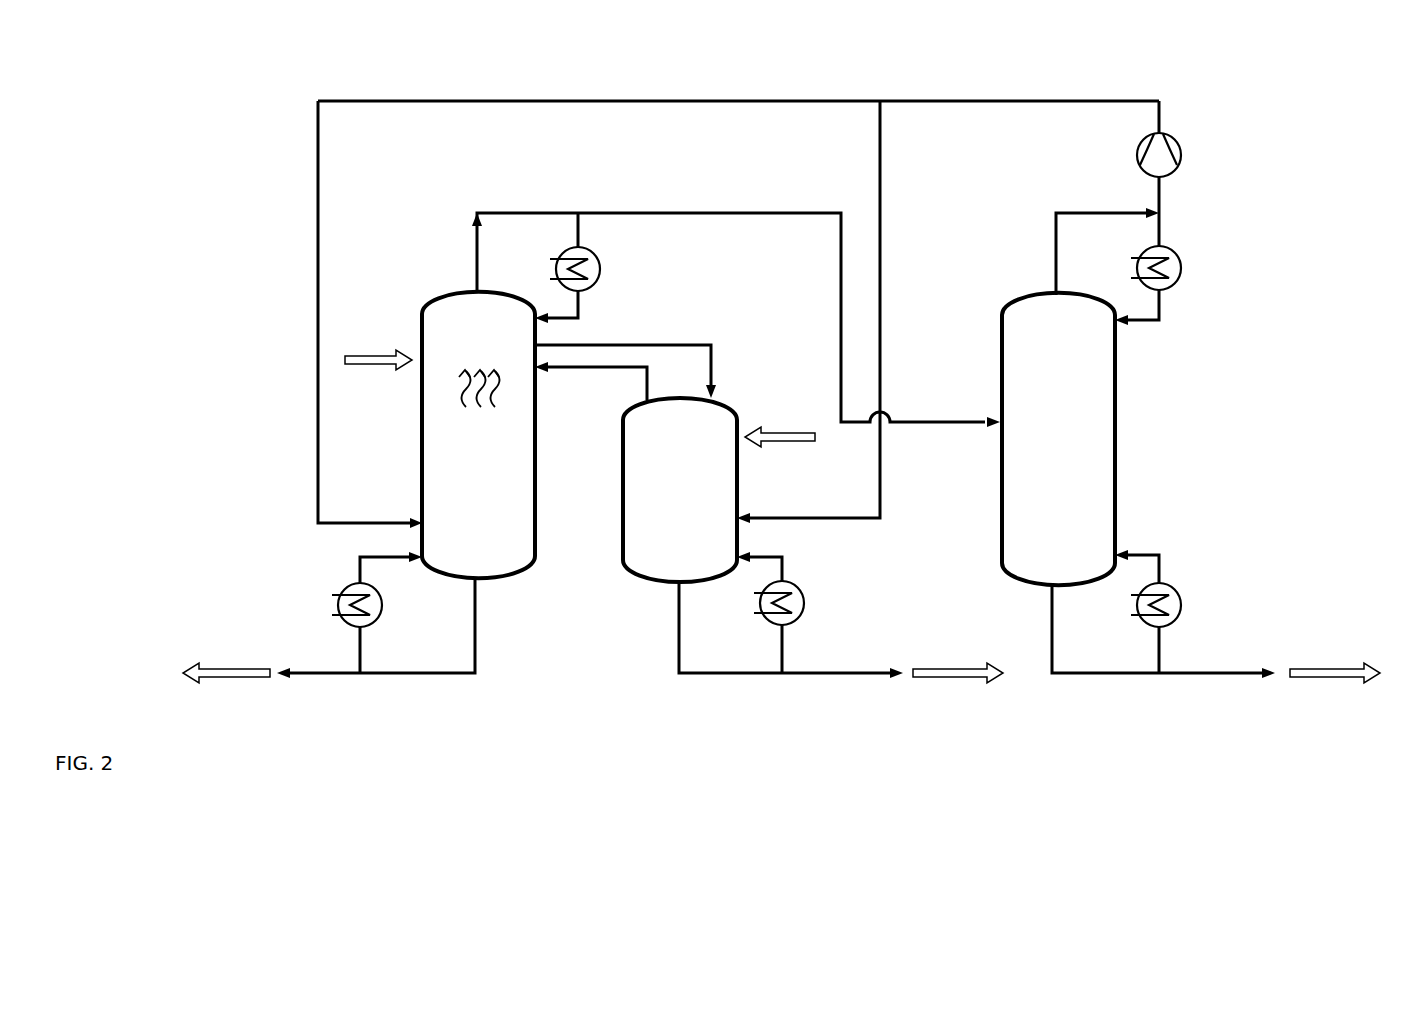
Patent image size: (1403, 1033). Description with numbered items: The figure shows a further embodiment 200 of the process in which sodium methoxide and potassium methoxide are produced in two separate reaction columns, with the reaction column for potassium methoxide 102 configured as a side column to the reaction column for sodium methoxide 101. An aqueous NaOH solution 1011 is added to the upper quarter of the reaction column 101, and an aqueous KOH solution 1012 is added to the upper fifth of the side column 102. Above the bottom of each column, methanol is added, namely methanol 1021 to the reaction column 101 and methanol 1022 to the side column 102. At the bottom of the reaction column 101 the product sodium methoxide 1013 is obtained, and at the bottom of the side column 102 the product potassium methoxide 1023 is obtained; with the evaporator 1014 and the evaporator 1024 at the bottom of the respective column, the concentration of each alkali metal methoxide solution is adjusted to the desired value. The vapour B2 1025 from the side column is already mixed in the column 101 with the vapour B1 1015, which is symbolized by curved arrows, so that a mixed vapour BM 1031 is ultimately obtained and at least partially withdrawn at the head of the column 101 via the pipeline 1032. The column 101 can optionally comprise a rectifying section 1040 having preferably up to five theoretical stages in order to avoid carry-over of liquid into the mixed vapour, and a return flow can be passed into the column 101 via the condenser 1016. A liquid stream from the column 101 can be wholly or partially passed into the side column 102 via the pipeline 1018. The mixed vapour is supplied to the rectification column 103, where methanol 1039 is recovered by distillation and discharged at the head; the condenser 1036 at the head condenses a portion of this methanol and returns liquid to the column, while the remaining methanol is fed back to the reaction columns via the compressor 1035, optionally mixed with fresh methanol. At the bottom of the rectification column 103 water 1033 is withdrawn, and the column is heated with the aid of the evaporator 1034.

The embodiment 200 is at (273, 432).
The reaction column 101 is at (413, 407).
The aqueous NaOH solution 1011 is at (374, 350).
The aqueous KOH solution 1012 is at (783, 423).
The sodium methoxide 1013 is at (329, 630).
The evaporator 1014 is at (325, 600).
The vapour B1 1015 is at (477, 402).
The condenser 1016 is at (612, 267).
The pipeline 1018 is at (625, 355).
The methanol 1021 is at (370, 314).
The methanol 1022 is at (808, 312).
The potassium methoxide 1023 is at (841, 632).
The evaporator 1024 is at (817, 600).
The vapour B2 1025 is at (591, 381).
The side column 102 is at (622, 470).
The rectification column 103 is at (1135, 430).
The mixed vapour BM 1031 is at (473, 350).
The pipeline 1032 is at (473, 262).
The water 1033 is at (1216, 634).
The evaporator 1034 is at (1198, 605).
The compressor 1035 is at (1195, 155).
The condenser 1036 is at (1200, 267).
The methanol 1039 is at (1107, 240).
The rectifying section 1040 is at (428, 337).